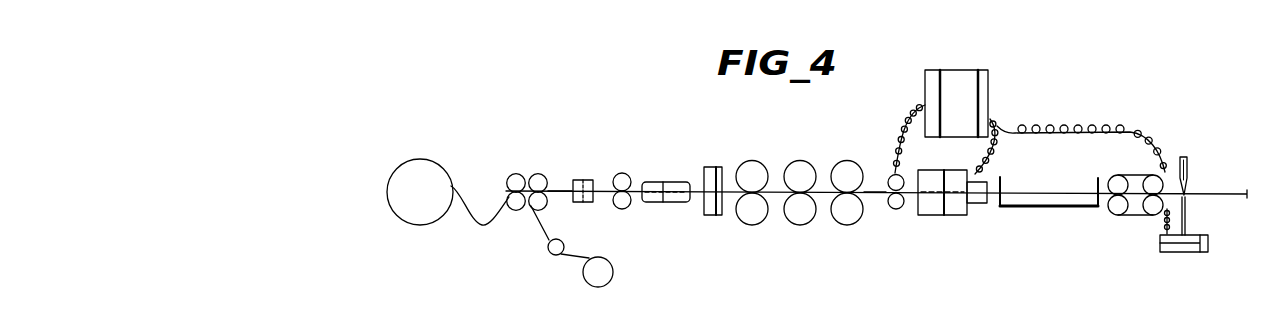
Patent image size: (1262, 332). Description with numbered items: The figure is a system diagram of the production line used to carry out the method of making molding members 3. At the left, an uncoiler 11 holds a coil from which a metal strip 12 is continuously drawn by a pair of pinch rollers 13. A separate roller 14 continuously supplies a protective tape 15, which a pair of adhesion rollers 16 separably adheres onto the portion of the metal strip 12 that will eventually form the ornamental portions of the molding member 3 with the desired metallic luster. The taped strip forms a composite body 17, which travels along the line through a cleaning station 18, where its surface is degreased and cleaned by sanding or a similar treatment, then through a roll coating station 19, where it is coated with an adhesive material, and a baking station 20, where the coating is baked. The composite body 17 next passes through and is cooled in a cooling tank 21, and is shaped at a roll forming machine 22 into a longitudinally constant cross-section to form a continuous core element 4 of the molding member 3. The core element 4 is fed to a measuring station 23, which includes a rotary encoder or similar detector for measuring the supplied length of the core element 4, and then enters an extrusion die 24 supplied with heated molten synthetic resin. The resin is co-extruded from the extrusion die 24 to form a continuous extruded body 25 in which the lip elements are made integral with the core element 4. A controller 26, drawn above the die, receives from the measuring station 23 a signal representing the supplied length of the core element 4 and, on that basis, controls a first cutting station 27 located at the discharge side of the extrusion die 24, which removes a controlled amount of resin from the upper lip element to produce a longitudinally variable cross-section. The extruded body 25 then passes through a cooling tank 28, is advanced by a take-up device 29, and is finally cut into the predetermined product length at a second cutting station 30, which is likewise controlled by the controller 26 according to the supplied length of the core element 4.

The molding member 3 is at (1230, 195).
The core element 4 is at (875, 193).
The uncoiler 11 is at (423, 162).
The metal strip 12 is at (483, 226).
The pinch rollers 13 is at (513, 175).
The roller 14 is at (607, 270).
The protective tape 15 is at (540, 233).
The adhesion rollers 16 is at (538, 173).
The composite body 17 is at (562, 189).
The cleaning station 18 is at (585, 181).
The roll coating station 19 is at (627, 205).
The baking station 20 is at (663, 182).
The cooling tank 21 is at (713, 167).
The roll forming machine 22 is at (800, 160).
The measuring station 23 is at (893, 178).
The extrusion die 24 is at (937, 215).
The extruded body 25 is at (993, 205).
The controller 26 is at (990, 88).
The first cutting station 27 is at (977, 203).
The cooling tank 28 is at (1060, 207).
The take-up device 29 is at (1138, 215).
The second cutting station 30 is at (1187, 188).